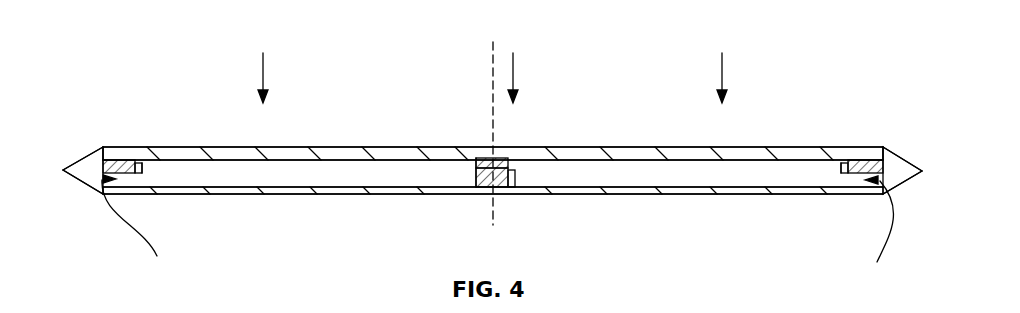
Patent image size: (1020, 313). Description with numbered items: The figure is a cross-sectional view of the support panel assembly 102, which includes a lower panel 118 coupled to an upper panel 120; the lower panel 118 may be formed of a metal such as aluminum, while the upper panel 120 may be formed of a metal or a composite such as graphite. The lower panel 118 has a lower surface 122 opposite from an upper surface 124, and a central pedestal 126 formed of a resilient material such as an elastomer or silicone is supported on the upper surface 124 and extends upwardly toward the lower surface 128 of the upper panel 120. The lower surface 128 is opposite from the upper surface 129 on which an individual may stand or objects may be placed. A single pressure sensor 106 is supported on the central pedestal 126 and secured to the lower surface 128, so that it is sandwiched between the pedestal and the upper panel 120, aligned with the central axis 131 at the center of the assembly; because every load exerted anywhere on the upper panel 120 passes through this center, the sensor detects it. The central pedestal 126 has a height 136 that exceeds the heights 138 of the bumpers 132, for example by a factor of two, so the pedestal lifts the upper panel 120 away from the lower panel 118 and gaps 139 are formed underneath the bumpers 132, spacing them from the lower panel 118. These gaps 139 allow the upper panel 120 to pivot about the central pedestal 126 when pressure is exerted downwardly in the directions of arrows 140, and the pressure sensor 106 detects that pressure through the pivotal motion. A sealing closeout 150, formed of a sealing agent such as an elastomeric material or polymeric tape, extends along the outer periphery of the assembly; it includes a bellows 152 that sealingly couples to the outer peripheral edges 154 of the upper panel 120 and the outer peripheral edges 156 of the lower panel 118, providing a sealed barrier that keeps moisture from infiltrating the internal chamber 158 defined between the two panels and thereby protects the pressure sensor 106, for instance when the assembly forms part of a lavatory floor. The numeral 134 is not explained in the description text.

The support panel assembly 102 is at (198, 56).
The pressure sensor 106 is at (508, 163).
The lower panel 118 is at (775, 196).
The upper panel 120 is at (657, 147).
The lower surface 122 is at (598, 196).
The upper surface 124 is at (655, 185).
The central pedestal 126 is at (477, 183).
The lower surface 128 is at (367, 154).
The upper surface 129 is at (420, 148).
The central axis 131 is at (492, 62).
The bumpers 132 is at (139, 164).
The end bracket 134 is at (122, 162).
The height 136 is at (514, 188).
The heights 138 is at (142, 174).
The gaps 139 is at (74, 178).
The arrows 140 is at (264, 80).
The sealing closeout 150 is at (92, 156).
The bellows 152 is at (87, 181).
The outer peripheral edges 154 is at (103, 147).
The outer peripheral edges 156 is at (500, 231).
The internal chamber 158 is at (594, 162).